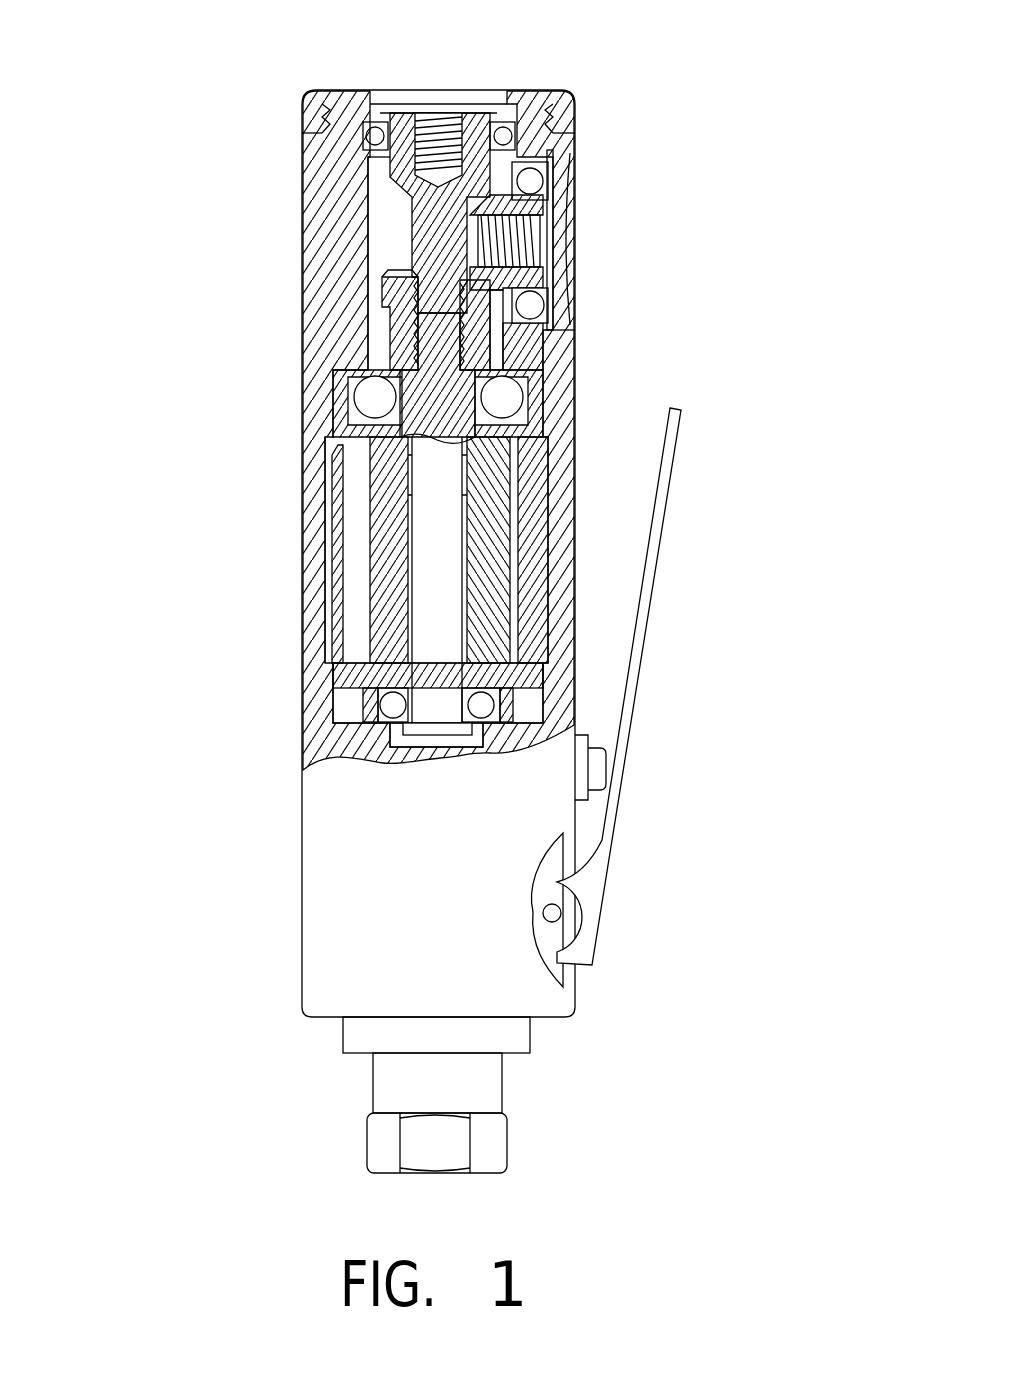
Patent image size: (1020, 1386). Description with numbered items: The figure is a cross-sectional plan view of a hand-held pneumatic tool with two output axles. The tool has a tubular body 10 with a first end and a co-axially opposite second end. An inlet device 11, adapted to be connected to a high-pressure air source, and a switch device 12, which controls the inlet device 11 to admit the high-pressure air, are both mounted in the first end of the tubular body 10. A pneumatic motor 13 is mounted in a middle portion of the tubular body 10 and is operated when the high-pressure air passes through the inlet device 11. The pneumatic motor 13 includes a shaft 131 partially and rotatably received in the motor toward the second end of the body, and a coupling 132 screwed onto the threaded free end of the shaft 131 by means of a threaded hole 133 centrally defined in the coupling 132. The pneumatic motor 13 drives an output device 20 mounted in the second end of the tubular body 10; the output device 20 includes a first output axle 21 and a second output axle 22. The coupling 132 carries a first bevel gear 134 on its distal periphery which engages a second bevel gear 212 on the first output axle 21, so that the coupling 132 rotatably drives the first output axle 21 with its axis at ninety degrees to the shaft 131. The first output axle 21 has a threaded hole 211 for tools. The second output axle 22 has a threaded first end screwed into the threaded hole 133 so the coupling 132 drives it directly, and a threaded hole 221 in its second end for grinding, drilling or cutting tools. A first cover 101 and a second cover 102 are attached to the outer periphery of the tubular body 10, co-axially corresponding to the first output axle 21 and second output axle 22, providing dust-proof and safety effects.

The tubular body 10 is at (600, 335).
The first cover 101 is at (572, 195).
The second cover 102 is at (548, 91).
The inlet device 11 is at (520, 1088).
The switch device 12 is at (652, 703).
The pneumatic motor 13 is at (378, 523).
The shaft 131 is at (555, 440).
The coupling 132 is at (397, 338).
The threaded hole 133 is at (397, 310).
The first bevel gear 134 is at (400, 290).
The output device 20 is at (398, 224).
The first output axle 21 is at (533, 280).
The threaded hole 211 is at (533, 238).
The second bevel gear 212 is at (550, 160).
The second output axle 22 is at (400, 162).
The threaded hole 221 is at (436, 128).